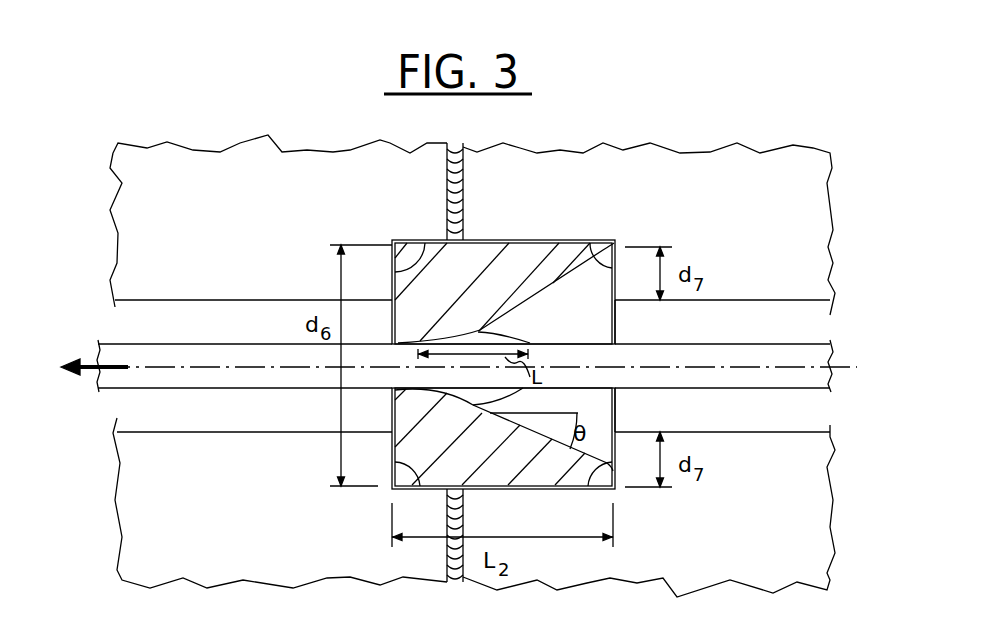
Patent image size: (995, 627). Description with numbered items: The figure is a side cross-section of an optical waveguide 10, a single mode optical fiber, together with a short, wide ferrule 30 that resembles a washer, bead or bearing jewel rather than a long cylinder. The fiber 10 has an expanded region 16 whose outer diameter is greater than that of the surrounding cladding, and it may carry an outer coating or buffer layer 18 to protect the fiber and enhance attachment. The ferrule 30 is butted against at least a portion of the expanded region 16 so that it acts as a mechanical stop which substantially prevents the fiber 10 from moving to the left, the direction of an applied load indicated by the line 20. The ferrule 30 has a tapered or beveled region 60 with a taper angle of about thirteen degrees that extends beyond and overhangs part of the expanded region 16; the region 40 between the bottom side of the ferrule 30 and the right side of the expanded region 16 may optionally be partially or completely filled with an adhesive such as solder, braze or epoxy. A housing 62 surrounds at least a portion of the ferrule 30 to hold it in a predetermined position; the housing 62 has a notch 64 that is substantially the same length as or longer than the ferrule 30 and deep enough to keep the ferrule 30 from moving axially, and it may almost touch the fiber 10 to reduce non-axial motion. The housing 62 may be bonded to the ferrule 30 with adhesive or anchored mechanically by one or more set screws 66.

The optical waveguide 10 is at (102, 332).
The expanded region 16 is at (512, 326).
The outer coating or buffer layer 18 is at (742, 346).
The line 20 is at (98, 372).
The ferrule 30 is at (494, 309).
The region 40 is at (614, 340).
The tapered or beveled region 60 is at (527, 306).
The housing 62 is at (208, 226).
The notch 64 is at (423, 240).
The set screws 66 is at (468, 200).